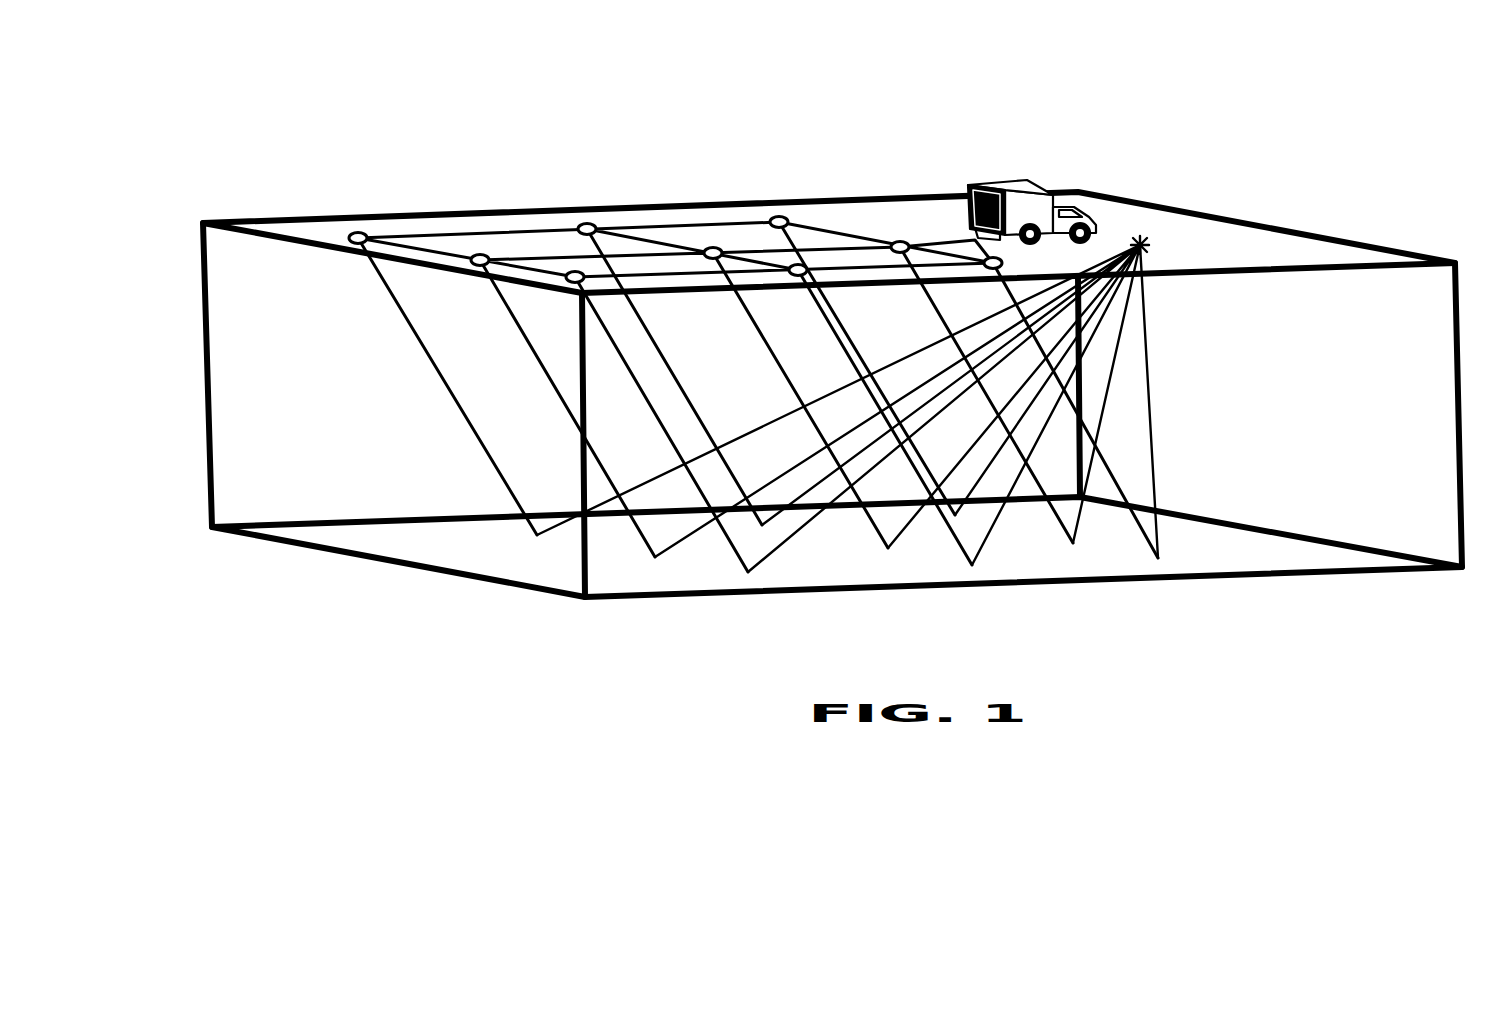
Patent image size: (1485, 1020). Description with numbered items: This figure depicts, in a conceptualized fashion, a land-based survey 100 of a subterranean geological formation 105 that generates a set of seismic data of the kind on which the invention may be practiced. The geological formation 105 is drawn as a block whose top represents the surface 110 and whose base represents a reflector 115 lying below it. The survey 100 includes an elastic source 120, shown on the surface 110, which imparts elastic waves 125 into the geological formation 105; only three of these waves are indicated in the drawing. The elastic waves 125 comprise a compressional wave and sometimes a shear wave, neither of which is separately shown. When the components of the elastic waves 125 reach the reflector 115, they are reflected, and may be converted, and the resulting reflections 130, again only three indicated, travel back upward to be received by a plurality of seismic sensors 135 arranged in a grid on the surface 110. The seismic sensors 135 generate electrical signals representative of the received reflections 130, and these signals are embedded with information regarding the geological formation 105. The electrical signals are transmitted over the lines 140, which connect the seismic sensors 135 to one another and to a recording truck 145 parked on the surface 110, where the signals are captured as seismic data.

The land-based survey 100 is at (472, 143).
The subterranean geological formation 105 is at (205, 385).
The surface 110 is at (1308, 255).
The reflector 115 is at (567, 578).
The elastic source 120 is at (1150, 243).
The elastic waves 125 is at (1100, 337).
The reflections 130 is at (575, 425).
The seismic sensors 135 is at (360, 228).
The lines 140 is at (705, 220).
The recording truck 145 is at (1000, 183).